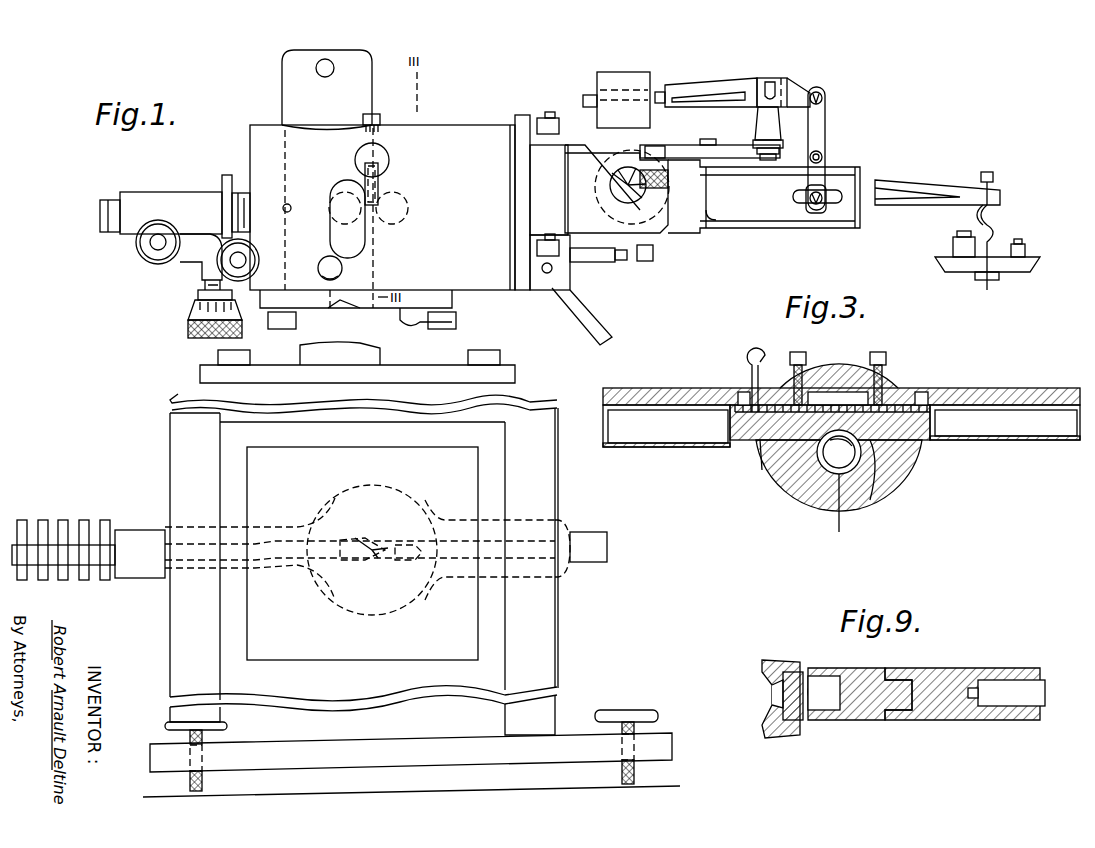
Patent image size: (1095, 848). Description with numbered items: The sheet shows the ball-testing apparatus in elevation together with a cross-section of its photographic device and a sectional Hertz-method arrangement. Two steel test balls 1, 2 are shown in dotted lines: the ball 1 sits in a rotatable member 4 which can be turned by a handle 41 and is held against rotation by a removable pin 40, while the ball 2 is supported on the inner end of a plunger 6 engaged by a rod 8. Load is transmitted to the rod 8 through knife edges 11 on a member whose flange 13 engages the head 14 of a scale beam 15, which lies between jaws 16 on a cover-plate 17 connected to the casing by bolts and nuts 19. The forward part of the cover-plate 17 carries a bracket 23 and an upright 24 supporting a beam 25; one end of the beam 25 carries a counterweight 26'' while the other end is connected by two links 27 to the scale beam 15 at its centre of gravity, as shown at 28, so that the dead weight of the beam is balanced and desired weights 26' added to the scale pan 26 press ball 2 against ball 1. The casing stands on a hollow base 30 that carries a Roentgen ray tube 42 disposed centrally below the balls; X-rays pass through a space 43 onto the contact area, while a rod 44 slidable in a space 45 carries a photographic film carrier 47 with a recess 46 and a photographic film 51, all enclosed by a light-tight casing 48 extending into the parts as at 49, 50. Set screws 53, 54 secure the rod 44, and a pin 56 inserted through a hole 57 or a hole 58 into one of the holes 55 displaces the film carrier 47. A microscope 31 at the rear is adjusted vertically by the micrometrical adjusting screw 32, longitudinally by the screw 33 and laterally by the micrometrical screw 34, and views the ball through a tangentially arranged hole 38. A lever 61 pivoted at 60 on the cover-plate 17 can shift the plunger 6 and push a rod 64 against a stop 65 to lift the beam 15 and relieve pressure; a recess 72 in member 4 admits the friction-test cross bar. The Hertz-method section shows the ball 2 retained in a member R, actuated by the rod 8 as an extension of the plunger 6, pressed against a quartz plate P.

In FIG. 1, the ball 1 is at (347, 219).
In FIG. 1, the ball 2 is at (392, 219).
In FIG. 3, the ball 2 is at (778, 508).
In FIG. 9, the ball 2 is at (823, 692).
In FIG. 1, the rotatable member 4 is at (362, 100).
In FIG. 9, the plunger 6 is at (940, 680).
In FIG. 3, the rod 8 is at (812, 525).
In FIG. 9, the rod 8 is at (1018, 688).
In FIG. 1, the knife edges 11 is at (615, 188).
In FIG. 1, the flange 13 is at (605, 160).
In FIG. 1, the head 14 is at (585, 155).
In FIG. 1, the scale beam 15 is at (768, 222).
In FIG. 1, the jaws 16 is at (549, 190).
In FIG. 1, the cover-plate 17 is at (520, 120).
In FIG. 1, the bolts and nuts 19 is at (528, 292).
In FIG. 1, the bracket 23 is at (725, 148).
In FIG. 1, the upright 24 is at (780, 136).
In FIG. 1, the beam 25 is at (720, 96).
In FIG. 1, the scale pan 26 is at (961, 281).
In FIG. 1, the weights 26' is at (996, 231).
In FIG. 1, the counterweight 26'' is at (616, 87).
In FIG. 1, the links 27 is at (826, 140).
In FIG. 1, the connection at centre of gravity 28 is at (816, 214).
In FIG. 1, the hollow base 30 is at (170, 518).
In FIG. 1, the microscope 31 is at (180, 192).
In FIG. 9, the microscope 31 is at (768, 694).
In FIG. 1, the micrometrical adjusting screw 32 is at (190, 308).
In FIG. 1, the screw 33 is at (142, 254).
In FIG. 1, the micrometrical screw 34 is at (258, 258).
In FIG. 1, the tangentially arranged hole 38 is at (285, 205).
In FIG. 1, the removable pin 40 is at (340, 270).
In FIG. 1, the handle 41 is at (318, 72).
In FIG. 1, the Roentgen ray tube 42 is at (326, 606).
In FIG. 3, the space 43 is at (845, 532).
In FIG. 1, the rod 44 is at (388, 160).
In FIG. 3, the rod 44 is at (676, 396).
In FIG. 3, the space 45 is at (822, 384).
In FIG. 3, the recess 46 is at (666, 426).
In FIG. 1, the photographic film carrier 47 is at (380, 186).
In FIG. 3, the photographic film carrier 47 is at (925, 428).
In FIG. 3, the casing 48 is at (680, 448).
In FIG. 3, the extension of casing 49 is at (758, 462).
In FIG. 3, the extension of casing 50 is at (920, 455).
In FIG. 3, the photographic film 51 is at (900, 445).
In FIG. 3, the set screw 53 is at (805, 348).
In FIG. 1, the set screw 54 is at (381, 118).
In FIG. 3, the set screw 54 is at (886, 348).
In FIG. 3, the holes 55 is at (740, 392).
In FIG. 3, the pin 56 is at (752, 350).
In FIG. 3, the hole 57 is at (748, 380).
In FIG. 3, the hole 58 is at (922, 392).
In FIG. 1, the pivot 60 is at (547, 274).
In FIG. 1, the lever 61 is at (582, 320).
In FIG. 1, the rod 64 is at (624, 260).
In FIG. 1, the stop 65 is at (654, 256).
In FIG. 1, the recess 72 is at (330, 229).
In FIG. 9, the quartz plate P is at (792, 660).
In FIG. 9, the member R is at (868, 680).